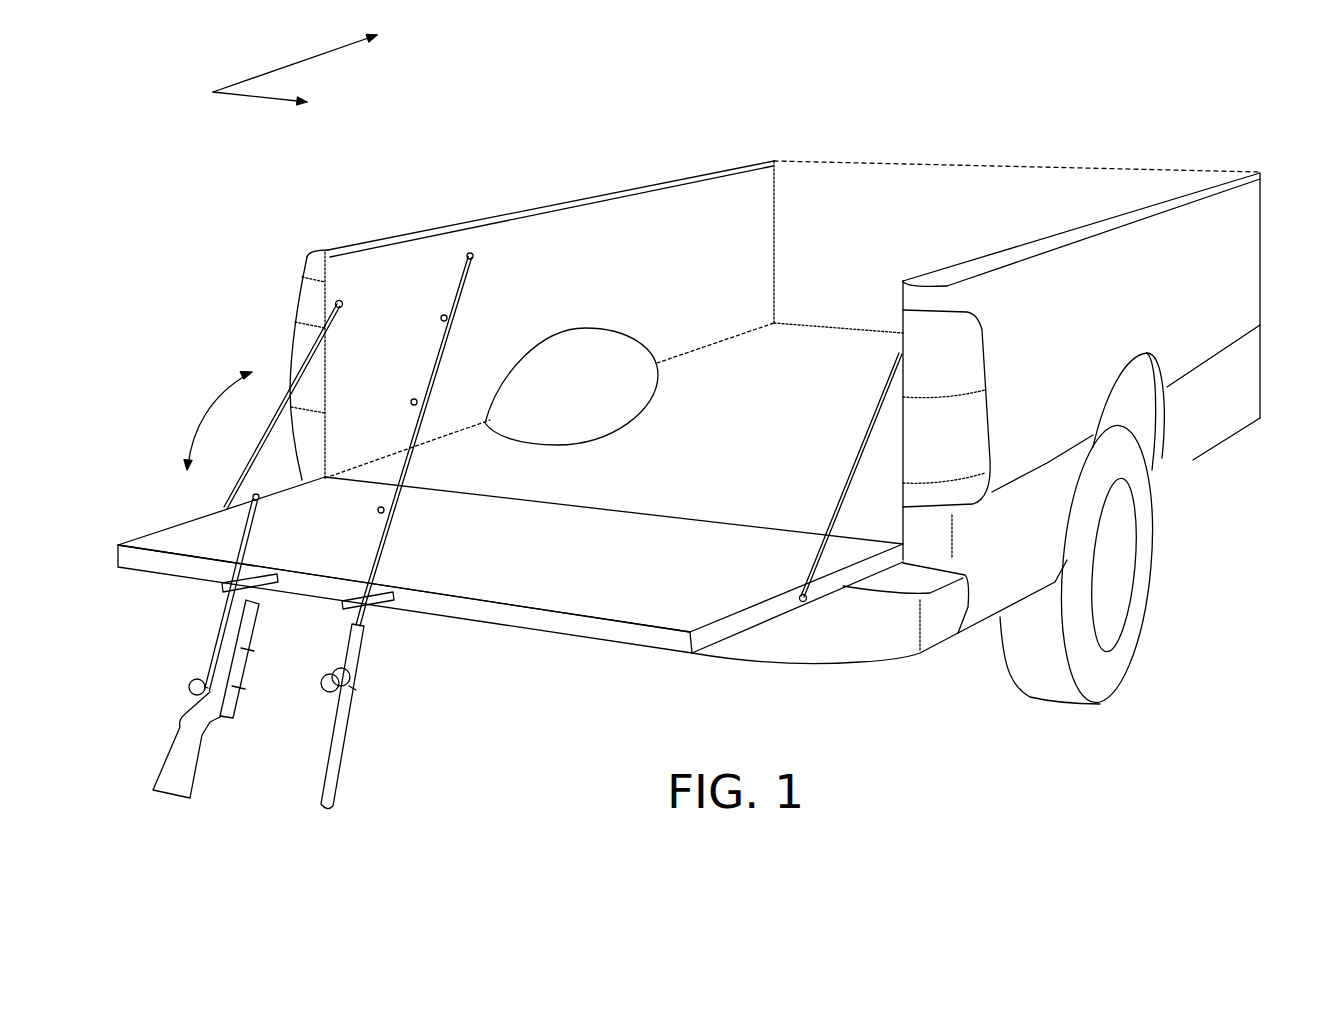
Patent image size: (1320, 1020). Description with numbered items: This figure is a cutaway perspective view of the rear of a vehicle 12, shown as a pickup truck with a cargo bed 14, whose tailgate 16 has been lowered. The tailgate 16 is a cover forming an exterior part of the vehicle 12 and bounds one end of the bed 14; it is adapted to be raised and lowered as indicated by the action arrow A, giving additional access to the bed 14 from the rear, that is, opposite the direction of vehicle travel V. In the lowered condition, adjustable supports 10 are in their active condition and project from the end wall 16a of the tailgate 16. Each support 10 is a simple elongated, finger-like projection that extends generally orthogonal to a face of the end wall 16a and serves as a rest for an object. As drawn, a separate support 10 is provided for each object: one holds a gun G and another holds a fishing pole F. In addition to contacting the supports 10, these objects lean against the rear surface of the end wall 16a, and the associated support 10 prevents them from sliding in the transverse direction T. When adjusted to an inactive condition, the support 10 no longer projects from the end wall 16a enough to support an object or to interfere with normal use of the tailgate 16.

The adjustable support 10 is at (270, 594).
The vehicle 12 is at (1215, 408).
The bed 14 is at (378, 333).
The tailgate 16 is at (150, 505).
The end wall 16a is at (545, 623).
The action arrow A is at (218, 421).
The fishing pole F is at (352, 700).
The gun G is at (180, 718).
The direction of vehicle travel V is at (295, 64).
The transverse direction T is at (260, 106).